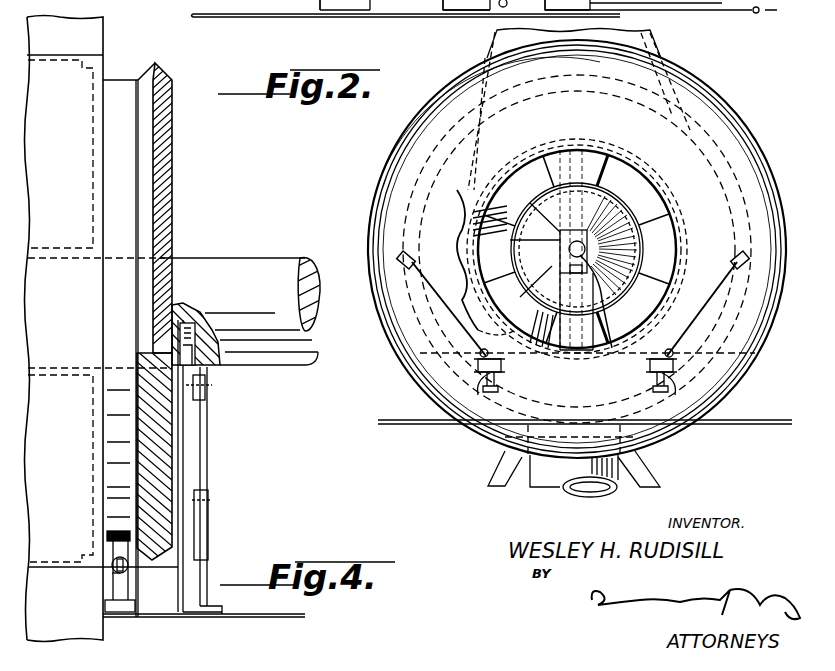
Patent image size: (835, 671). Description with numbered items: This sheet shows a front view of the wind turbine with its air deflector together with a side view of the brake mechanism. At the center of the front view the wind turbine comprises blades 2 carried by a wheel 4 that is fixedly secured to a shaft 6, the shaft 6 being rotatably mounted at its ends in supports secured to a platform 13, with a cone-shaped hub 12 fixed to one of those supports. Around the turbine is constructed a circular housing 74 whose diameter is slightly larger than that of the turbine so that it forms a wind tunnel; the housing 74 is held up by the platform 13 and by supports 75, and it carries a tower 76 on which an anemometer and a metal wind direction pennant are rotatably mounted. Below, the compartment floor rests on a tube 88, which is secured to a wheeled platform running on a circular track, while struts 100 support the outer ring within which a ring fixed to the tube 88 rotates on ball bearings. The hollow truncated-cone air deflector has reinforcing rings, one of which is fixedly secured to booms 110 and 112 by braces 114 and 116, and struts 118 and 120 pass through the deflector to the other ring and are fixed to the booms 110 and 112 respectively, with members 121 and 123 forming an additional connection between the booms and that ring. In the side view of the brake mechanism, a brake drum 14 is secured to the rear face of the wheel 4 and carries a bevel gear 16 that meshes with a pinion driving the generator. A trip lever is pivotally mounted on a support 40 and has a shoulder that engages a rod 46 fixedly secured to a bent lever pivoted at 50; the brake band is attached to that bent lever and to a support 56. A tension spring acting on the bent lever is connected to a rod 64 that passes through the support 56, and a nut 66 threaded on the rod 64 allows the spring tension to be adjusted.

In FIG. 2, the blades 2 is at (552, 165).
In FIG. 2, the wheel 4 is at (545, 270).
In FIG. 4, the shaft 6 is at (232, 268).
In FIG. 2, the shaft 6 is at (562, 255).
In FIG. 2, the cone-shaped hub 12 is at (600, 300).
In FIG. 2, the platform 13 is at (760, 366).
In FIG. 4, the brake drum 14 is at (118, 78).
In FIG. 4, the bevel gear 16 is at (172, 165).
In FIG. 2, the support 40 is at (515, 3).
In FIG. 4, the rod 46 is at (178, 585).
In FIG. 2, the pivot 50 is at (458, 3).
In FIG. 4, the support 56 is at (130, 578).
In FIG. 2, the support 56 is at (318, 5).
In FIG. 4, the rod 64 is at (112, 573).
In FIG. 4, the nut 66 is at (120, 600).
In FIG. 2, the circular housing 74 is at (735, 100).
In FIG. 2, the supports 75 is at (475, 186).
In FIG. 2, the tower 76 is at (660, 45).
In FIG. 2, the tube 88 is at (552, 495).
In FIG. 2, the struts 100 is at (488, 486).
In FIG. 2, the boom 110 is at (648, 366).
In FIG. 2, the boom 112 is at (502, 366).
In FIG. 2, the brace 114 is at (664, 344).
In FIG. 2, the brace 116 is at (492, 344).
In FIG. 2, the strut 118 is at (440, 322).
In FIG. 2, the strut 120 is at (700, 310).
In FIG. 2, the member 121 is at (679, 393).
In FIG. 2, the member 123 is at (471, 393).